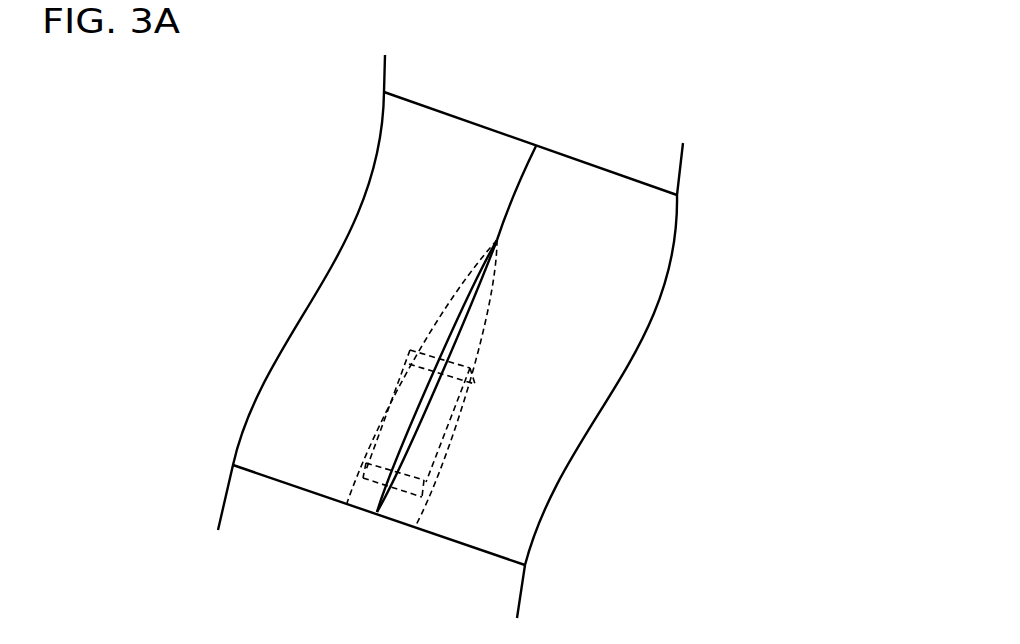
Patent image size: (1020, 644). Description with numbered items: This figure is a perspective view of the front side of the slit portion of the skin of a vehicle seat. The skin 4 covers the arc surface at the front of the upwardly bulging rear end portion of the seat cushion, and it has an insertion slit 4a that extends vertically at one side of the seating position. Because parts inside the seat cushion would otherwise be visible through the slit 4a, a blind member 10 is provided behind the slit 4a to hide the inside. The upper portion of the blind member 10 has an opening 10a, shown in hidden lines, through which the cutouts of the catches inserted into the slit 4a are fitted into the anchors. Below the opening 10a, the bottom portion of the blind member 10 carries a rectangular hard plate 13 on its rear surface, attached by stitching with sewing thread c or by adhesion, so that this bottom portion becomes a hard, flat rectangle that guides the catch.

The skin 4 is at (635, 258).
The insertion slit 4a is at (455, 342).
The blind member 10 is at (497, 278).
The opening 10a is at (466, 316).
The hard plate 13 is at (410, 392).
The sewing thread c is at (477, 373).